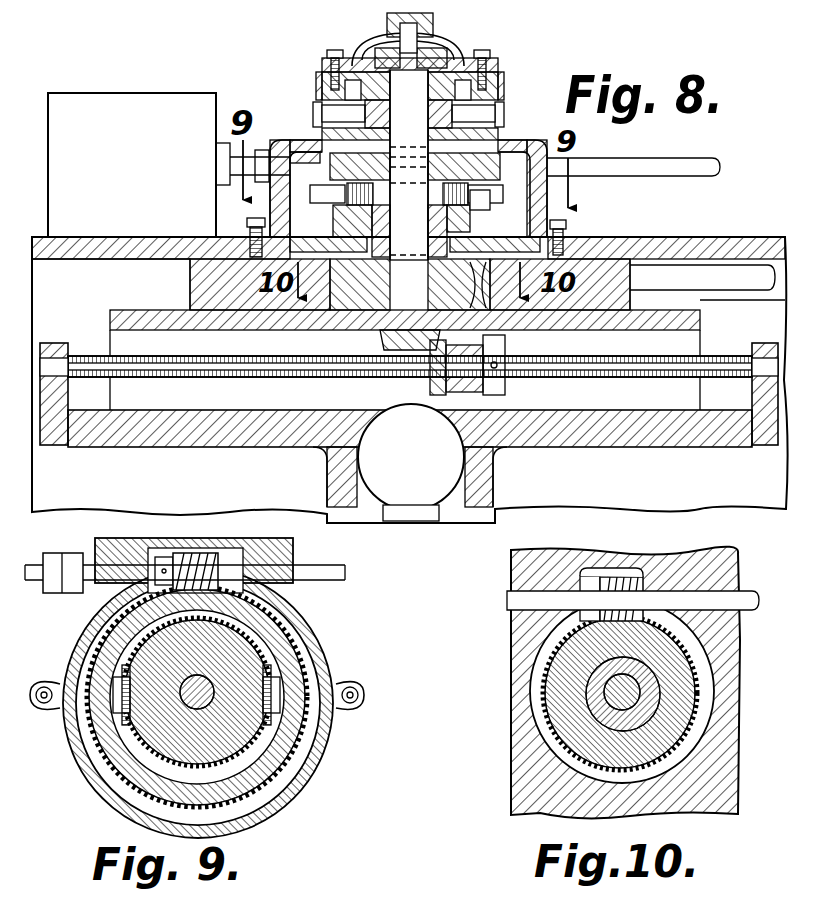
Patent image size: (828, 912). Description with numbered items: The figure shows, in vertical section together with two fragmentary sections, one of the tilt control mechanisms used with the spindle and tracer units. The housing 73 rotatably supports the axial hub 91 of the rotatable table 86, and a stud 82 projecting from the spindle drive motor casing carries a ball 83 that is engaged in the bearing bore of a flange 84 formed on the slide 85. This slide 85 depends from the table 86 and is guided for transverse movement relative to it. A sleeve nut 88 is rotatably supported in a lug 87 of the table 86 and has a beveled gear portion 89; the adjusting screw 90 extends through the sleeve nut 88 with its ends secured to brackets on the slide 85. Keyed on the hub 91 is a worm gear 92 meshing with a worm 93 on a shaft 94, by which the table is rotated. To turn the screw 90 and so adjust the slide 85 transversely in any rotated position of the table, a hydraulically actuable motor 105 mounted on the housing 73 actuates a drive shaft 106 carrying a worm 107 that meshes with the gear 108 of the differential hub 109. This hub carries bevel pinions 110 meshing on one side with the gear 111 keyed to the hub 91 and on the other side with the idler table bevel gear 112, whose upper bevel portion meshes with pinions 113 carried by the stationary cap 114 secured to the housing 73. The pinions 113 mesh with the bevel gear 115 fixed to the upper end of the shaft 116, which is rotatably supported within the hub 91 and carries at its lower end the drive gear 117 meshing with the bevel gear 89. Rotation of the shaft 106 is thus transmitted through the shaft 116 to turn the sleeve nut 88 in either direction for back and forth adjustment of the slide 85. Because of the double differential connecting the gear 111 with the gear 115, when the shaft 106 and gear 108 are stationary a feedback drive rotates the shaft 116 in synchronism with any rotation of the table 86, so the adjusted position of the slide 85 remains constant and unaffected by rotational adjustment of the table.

In FIG. 8, the housing 73 is at (720, 237).
In FIG. 10, the housing 73 is at (525, 775).
In FIG. 8, the stud 82 is at (400, 523).
In FIG. 8, the ball 83 is at (445, 489).
In FIG. 8, the flange 84 is at (495, 497).
In FIG. 8, the slide 85 is at (702, 448).
In FIG. 8, the rotatable table 86 is at (700, 320).
In FIG. 8, the lug 87 is at (508, 340).
In FIG. 8, the sleeve nut 88 is at (492, 382).
In FIG. 8, the beveled gear portion 89 is at (430, 382).
In FIG. 8, the adjusting screw 90 is at (242, 378).
In FIG. 8, the hub 91 is at (430, 251).
In FIG. 8, the worm gear 92 is at (552, 245).
In FIG. 10, the worm gear 92 is at (682, 745).
In FIG. 10, the worm 93 is at (650, 585).
In FIG. 8, the shaft 94 is at (758, 278).
In FIG. 10, the shaft 94 is at (742, 594).
In FIG. 8, the hydraulically actuable motor 105 is at (97, 93).
In FIG. 8, the drive shaft 106 is at (681, 178).
In FIG. 9, the drive shaft 106 is at (327, 581).
In FIG. 9, the worm 107 is at (186, 568).
In FIG. 8, the gear 108 is at (308, 157).
In FIG. 9, the gear 108 is at (292, 752).
In FIG. 8, the differential hub 109 is at (333, 212).
In FIG. 8, the bevel pinions 110 is at (330, 227).
In FIG. 9, the bevel pinions 110 is at (140, 722).
In FIG. 8, the gear 111 is at (480, 225).
In FIG. 8, the idler table bevel gear 112 is at (482, 158).
In FIG. 9, the idler table bevel gear 112 is at (252, 757).
In FIG. 8, the pinions 113 is at (335, 87).
In FIG. 8, the stationary cap 114 is at (503, 98).
In FIG. 9, the stationary cap 114 is at (310, 770).
In FIG. 8, the bevel gear 115 is at (450, 72).
In FIG. 8, the shaft 116 is at (362, 50).
In FIG. 8, the drive gear 117 is at (380, 337).